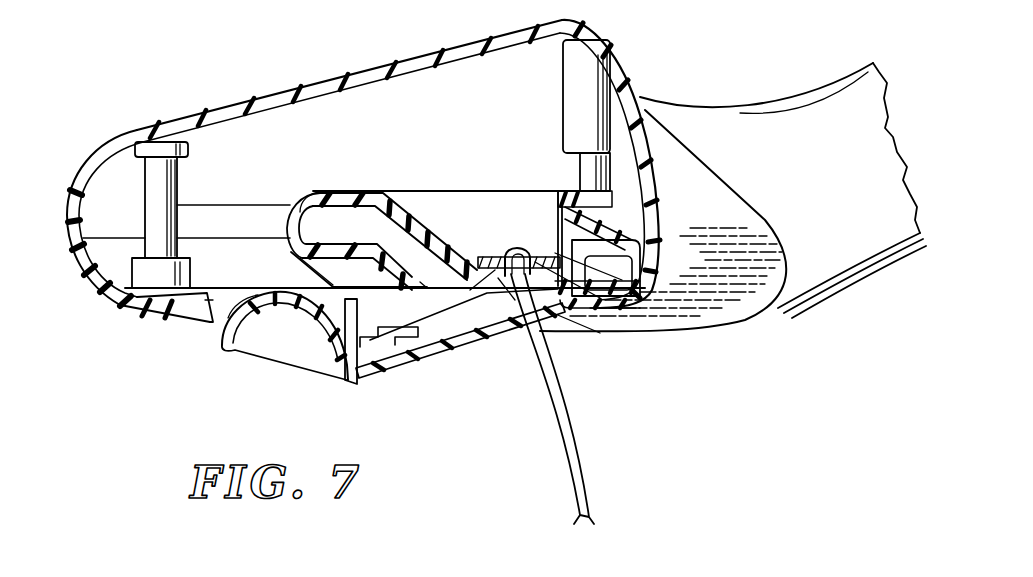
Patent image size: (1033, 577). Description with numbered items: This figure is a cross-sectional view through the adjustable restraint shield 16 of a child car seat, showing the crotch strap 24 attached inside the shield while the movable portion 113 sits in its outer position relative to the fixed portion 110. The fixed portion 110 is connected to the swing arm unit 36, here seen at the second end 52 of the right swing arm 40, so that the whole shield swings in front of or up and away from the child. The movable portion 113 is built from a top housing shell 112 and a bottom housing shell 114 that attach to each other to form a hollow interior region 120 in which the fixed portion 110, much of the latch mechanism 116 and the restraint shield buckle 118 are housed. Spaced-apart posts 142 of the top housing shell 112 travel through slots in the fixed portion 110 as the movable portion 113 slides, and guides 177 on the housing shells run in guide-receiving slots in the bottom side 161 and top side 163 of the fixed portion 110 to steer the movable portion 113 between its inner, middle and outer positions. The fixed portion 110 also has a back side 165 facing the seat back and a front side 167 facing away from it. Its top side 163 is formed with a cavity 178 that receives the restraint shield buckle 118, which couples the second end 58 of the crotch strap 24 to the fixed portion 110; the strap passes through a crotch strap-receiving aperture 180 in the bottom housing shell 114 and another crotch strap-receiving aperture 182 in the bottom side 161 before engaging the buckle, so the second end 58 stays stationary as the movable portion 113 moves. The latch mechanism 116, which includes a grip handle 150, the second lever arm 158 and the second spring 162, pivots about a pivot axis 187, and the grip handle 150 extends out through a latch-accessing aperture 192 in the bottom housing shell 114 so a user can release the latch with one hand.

The adjustable restraint shield 16 is at (106, 132).
The crotch strap 24 is at (516, 250).
The swing arm unit 36 is at (809, 305).
The right swing arm 40 is at (830, 118).
The second end of right swing arm 52 is at (675, 325).
The second end of crotch strap 58 is at (520, 297).
The fixed portion 110 is at (345, 190).
The top housing shell 112 is at (377, 71).
The movable portion 113 is at (336, 78).
The bottom housing shell 114 is at (143, 298).
The latch mechanism 116 is at (313, 390).
The restraint shield buckle 118 is at (490, 255).
The hollow interior region 120 is at (462, 95).
The posts 142 is at (163, 181).
The grip handle 150 is at (252, 352).
The second lever arm 158 is at (440, 348).
The bottom side of fixed portion 161 is at (580, 303).
The second spring 162 is at (388, 350).
The top side of fixed portion 163 is at (420, 190).
The back side of fixed portion 165 is at (648, 262).
The front side of fixed portion 167 is at (283, 212).
The guides 177 is at (527, 127).
The cavity 178 is at (460, 235).
The crotch strap-receiving aperture 180 is at (530, 343).
The crotch strap-receiving aperture 182 is at (503, 342).
The pivot axis 187 is at (290, 300).
The latch-accessing aperture 192 is at (208, 347).